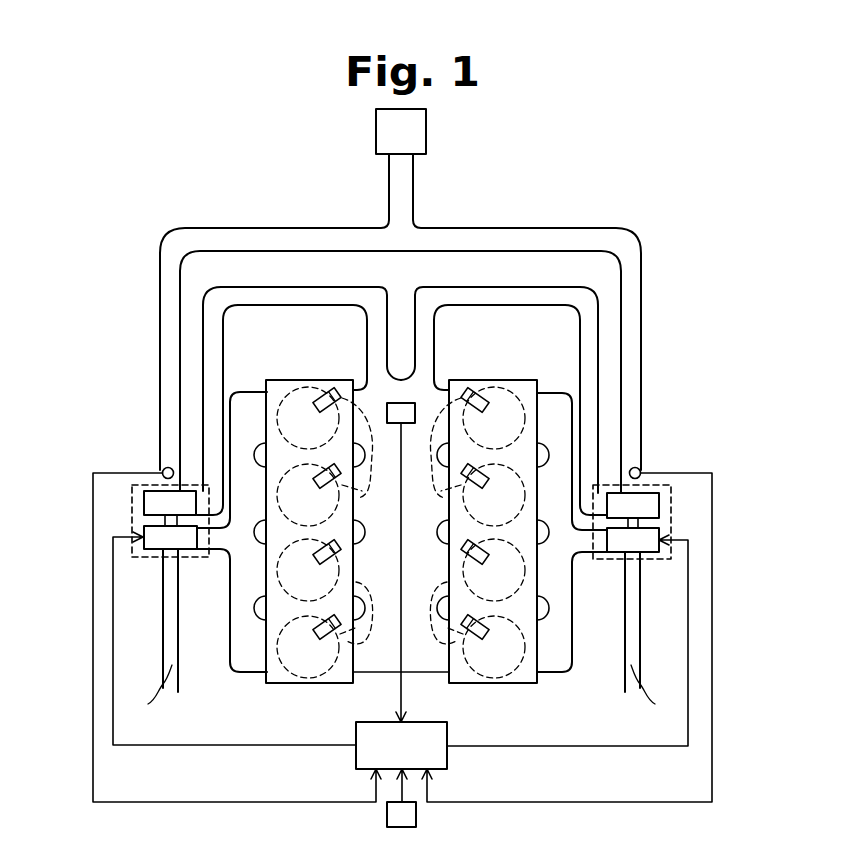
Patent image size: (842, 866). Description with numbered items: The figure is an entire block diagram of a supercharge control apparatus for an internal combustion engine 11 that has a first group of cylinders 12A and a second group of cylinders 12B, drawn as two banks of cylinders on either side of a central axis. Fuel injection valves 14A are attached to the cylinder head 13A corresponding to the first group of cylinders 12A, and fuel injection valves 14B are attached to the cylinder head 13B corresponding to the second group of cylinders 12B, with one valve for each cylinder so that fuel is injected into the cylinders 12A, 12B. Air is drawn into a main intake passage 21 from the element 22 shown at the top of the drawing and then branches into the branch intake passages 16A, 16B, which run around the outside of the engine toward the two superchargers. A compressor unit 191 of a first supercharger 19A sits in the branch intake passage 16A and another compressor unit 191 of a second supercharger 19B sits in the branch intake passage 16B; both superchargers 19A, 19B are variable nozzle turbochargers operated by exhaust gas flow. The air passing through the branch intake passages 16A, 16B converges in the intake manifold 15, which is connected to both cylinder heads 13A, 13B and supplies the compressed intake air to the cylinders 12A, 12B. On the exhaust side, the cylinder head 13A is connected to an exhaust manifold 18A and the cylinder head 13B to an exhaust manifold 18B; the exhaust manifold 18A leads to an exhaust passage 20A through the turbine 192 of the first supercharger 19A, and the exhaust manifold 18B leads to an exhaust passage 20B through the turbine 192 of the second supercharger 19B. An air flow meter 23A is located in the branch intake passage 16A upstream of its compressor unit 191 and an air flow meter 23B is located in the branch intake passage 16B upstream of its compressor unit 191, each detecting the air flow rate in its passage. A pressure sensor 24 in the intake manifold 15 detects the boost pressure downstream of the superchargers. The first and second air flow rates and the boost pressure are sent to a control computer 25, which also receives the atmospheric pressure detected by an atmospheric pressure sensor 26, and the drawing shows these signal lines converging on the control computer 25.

The internal combustion engine 11 is at (166, 186).
The first group of cylinders 12A is at (336, 532).
The second group of cylinders 12B is at (465, 532).
The cylinder head 13A is at (284, 683).
The cylinder head 13B is at (512, 683).
The fuel injection valves 14A is at (317, 482).
The fuel injection valves 14B is at (486, 482).
The intake manifold 15 is at (404, 672).
The branch intake passage 16A is at (257, 240).
The branch intake passage 16B is at (546, 240).
The exhaust manifold 18A is at (241, 650).
The exhaust manifold 18B is at (571, 656).
The first supercharger 19A is at (147, 434).
The second supercharger 19B is at (730, 434).
The compressor unit 191 is at (152, 497).
The turbine 192 is at (143, 535).
The exhaust passage 20A is at (153, 644).
The exhaust passage 20B is at (649, 645).
The main intake passage 21 is at (413, 172).
The air cleaner 22 is at (426, 129).
The air flow meter 23A is at (168, 467).
The air flow meter 23B is at (635, 467).
The pressure sensor 24 is at (407, 403).
The control computer 25 is at (447, 762).
The atmospheric pressure sensor 26 is at (416, 820).